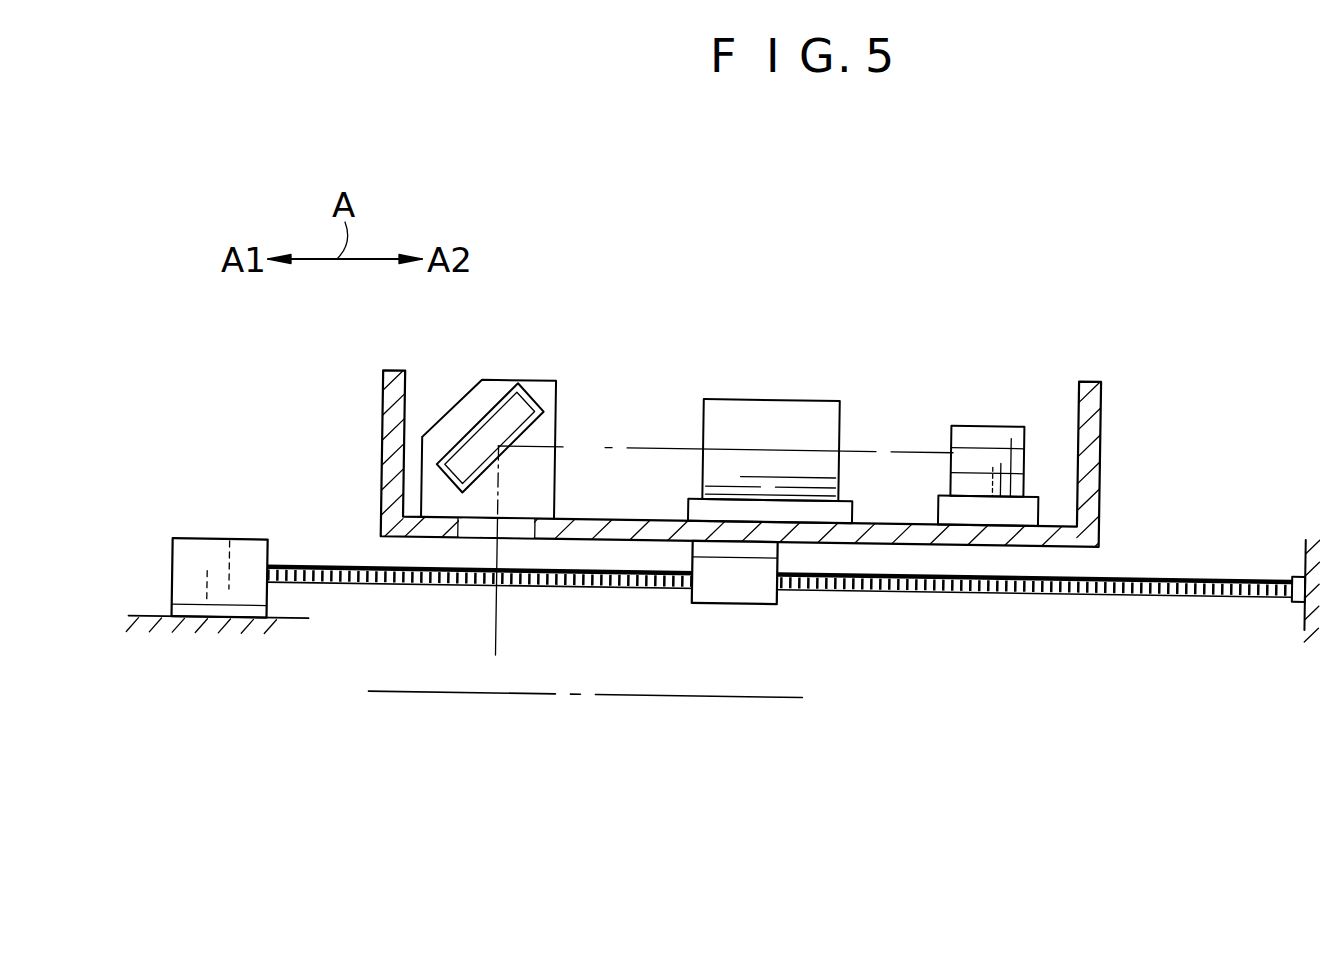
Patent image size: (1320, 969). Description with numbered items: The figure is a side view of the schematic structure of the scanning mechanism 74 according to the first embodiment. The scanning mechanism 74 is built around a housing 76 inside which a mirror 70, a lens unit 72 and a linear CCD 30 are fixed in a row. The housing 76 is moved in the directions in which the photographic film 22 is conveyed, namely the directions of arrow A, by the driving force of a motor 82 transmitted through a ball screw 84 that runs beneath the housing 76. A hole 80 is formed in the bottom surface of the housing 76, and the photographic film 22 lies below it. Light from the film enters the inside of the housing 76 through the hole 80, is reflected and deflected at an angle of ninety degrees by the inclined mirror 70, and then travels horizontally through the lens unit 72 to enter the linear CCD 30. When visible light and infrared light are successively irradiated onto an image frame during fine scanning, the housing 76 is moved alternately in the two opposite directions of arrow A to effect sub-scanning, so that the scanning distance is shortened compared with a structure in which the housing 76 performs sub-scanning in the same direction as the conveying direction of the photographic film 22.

The photographic film 22 is at (418, 694).
The linear CCD 30 is at (987, 417).
The mirror 70 is at (490, 437).
The lens unit 72 is at (769, 408).
The scanning mechanism 74 is at (890, 316).
The housing 76 is at (1100, 432).
The hole 80 is at (478, 527).
The motor 82 is at (223, 553).
The ball screw 84 is at (748, 592).